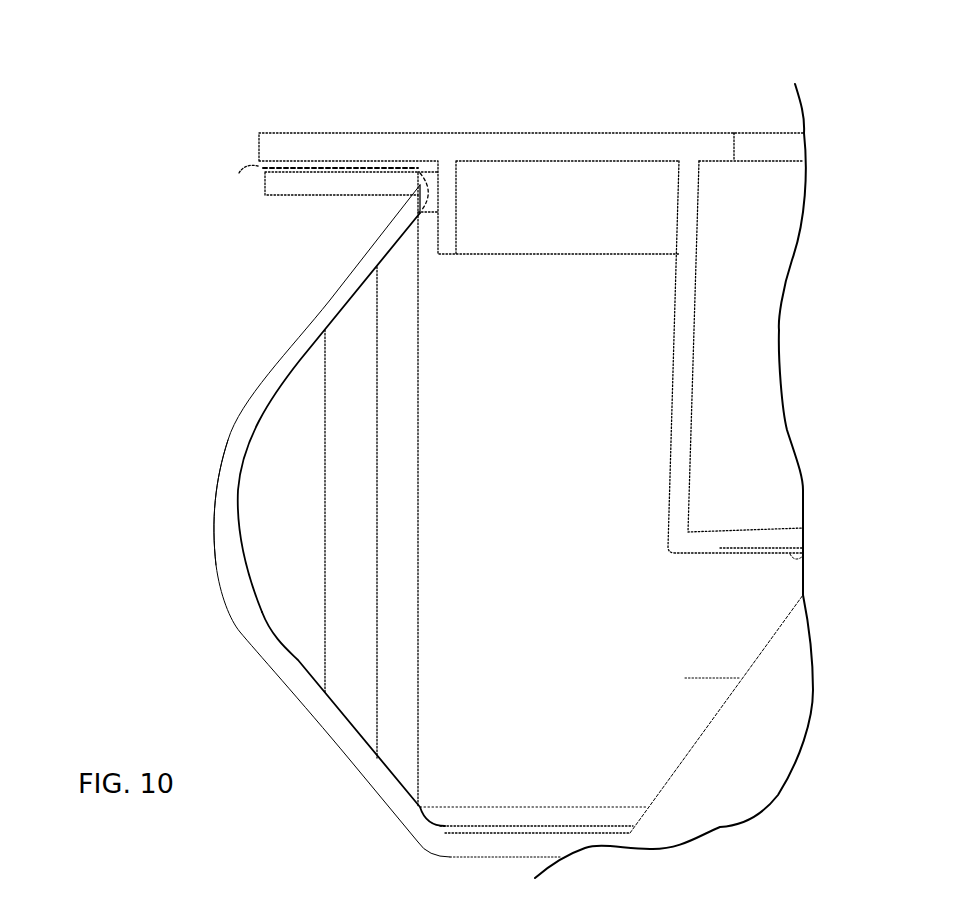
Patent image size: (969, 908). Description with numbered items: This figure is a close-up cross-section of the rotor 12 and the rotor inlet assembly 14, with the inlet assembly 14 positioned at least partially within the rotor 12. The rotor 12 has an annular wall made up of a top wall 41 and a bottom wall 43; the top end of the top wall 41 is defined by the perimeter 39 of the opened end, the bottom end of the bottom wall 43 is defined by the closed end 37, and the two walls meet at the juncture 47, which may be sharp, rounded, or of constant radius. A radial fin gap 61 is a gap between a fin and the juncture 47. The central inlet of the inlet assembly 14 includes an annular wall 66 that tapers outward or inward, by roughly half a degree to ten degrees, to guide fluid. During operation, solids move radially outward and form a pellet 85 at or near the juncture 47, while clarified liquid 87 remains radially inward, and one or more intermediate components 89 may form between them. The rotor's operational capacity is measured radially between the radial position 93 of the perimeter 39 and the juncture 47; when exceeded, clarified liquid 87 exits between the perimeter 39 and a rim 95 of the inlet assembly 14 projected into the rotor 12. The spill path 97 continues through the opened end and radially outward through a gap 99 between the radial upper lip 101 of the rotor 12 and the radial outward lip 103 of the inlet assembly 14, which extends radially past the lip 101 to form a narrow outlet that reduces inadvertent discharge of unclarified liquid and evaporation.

The rotor 12 is at (119, 440).
The rotor inlet assembly 14 is at (587, 416).
The closed end 37 is at (515, 843).
The perimeter 39 is at (417, 187).
The top wall 41 is at (280, 355).
The bottom wall 43 is at (305, 690).
The juncture 47 is at (227, 510).
The radial fin gap 61 is at (722, 705).
The annular wall 66 is at (683, 298).
The pellet 85 is at (278, 443).
The clarified liquid 87 is at (403, 471).
The intermediate components 89 is at (343, 615).
The radial position 93 is at (418, 743).
The rim 95 is at (447, 190).
The spill path 97 is at (258, 168).
The gap 99 is at (345, 165).
The radial upper lip 101 is at (300, 188).
The radial outward lip 103 is at (290, 140).